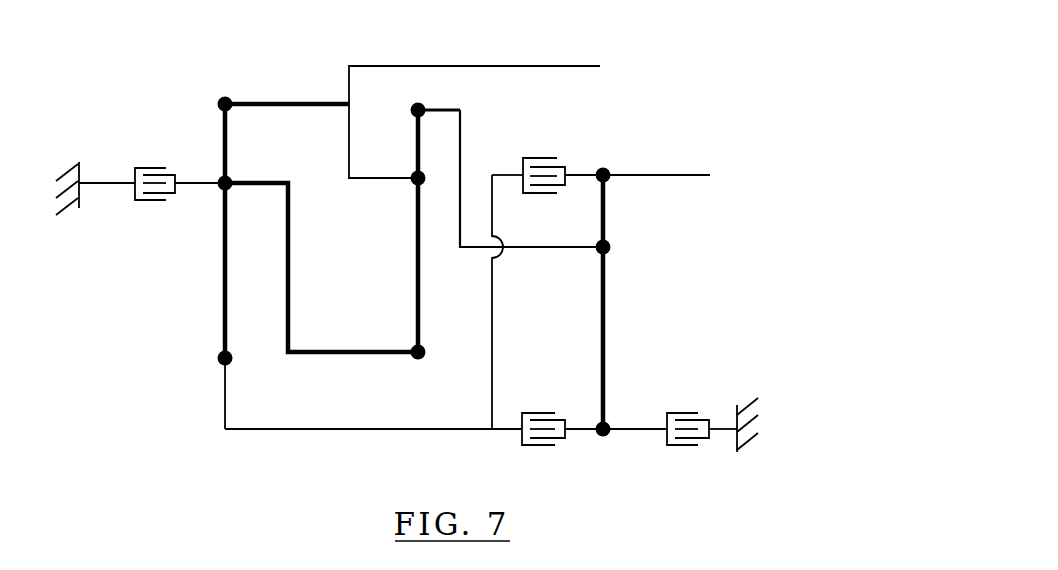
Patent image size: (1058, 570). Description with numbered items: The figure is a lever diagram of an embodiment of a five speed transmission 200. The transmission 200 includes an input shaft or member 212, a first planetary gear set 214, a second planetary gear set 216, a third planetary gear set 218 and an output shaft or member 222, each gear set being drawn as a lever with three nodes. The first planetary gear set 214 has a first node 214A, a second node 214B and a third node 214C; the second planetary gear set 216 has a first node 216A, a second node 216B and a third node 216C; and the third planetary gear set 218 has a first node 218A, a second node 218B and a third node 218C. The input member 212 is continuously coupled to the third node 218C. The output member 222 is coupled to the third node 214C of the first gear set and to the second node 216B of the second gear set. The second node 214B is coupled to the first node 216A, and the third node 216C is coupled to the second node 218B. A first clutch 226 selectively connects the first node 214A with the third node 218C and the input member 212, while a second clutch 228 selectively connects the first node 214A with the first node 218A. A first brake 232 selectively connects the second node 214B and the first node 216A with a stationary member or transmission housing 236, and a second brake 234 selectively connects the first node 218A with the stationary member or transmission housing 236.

The five speed transmission 200 is at (712, 53).
The input shaft or member 212 is at (677, 178).
The first planetary gear set 214 is at (211, 377).
The first node 214A is at (219, 358).
The second node 214B is at (221, 178).
The third node 214C is at (226, 98).
The second planetary gear set 216 is at (392, 377).
The first node 216A is at (418, 359).
The second node 216B is at (414, 184).
The third node 216C is at (416, 103).
The third planetary gear set 218 is at (631, 447).
The first node 218A is at (601, 437).
The second node 218B is at (608, 248).
The third node 218C is at (604, 171).
The output shaft or member 222 is at (491, 65).
The first clutch 226 is at (533, 158).
The second clutch 228 is at (543, 413).
The first brake 232 is at (152, 201).
The second brake 234 is at (673, 413).
The stationary member or transmission housing 236 is at (78, 163).